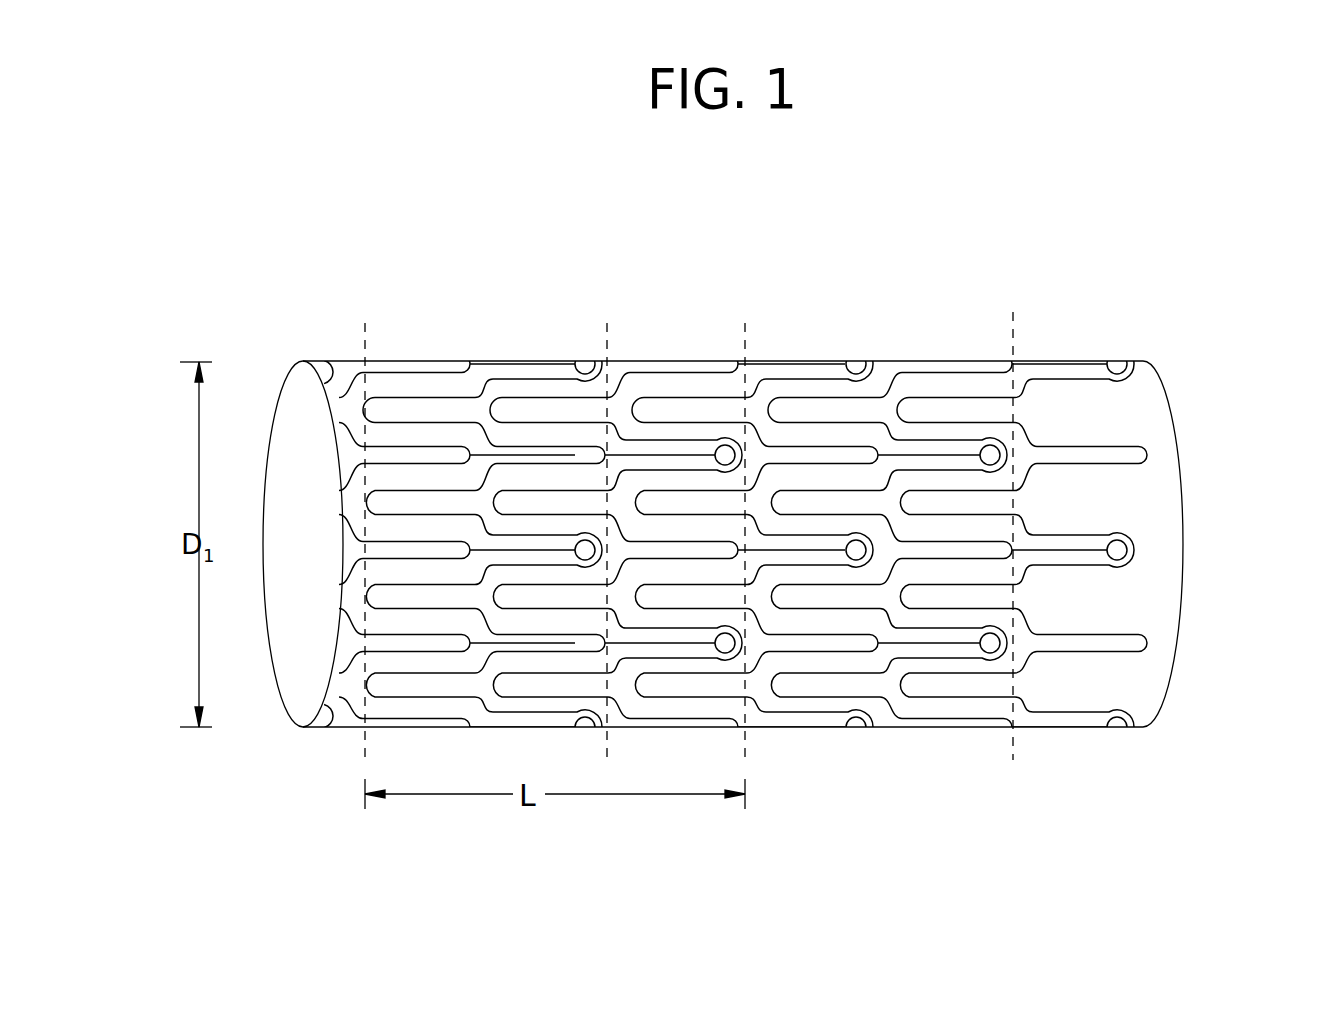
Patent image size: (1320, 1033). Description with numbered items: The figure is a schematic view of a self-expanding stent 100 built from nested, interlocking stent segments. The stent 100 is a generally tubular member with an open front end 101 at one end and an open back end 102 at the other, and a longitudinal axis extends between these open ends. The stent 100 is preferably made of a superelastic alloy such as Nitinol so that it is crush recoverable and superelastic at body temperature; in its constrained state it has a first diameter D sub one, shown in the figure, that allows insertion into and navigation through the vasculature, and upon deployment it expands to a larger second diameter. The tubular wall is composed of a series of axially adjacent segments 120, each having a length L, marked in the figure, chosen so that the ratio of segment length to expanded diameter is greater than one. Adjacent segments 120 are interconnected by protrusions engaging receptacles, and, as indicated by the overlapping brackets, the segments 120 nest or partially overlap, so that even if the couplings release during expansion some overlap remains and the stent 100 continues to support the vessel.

The stent 100 is at (970, 220).
The open front end 101 is at (283, 383).
The open back end 102 is at (1203, 546).
The segment 120 is at (1013, 310).